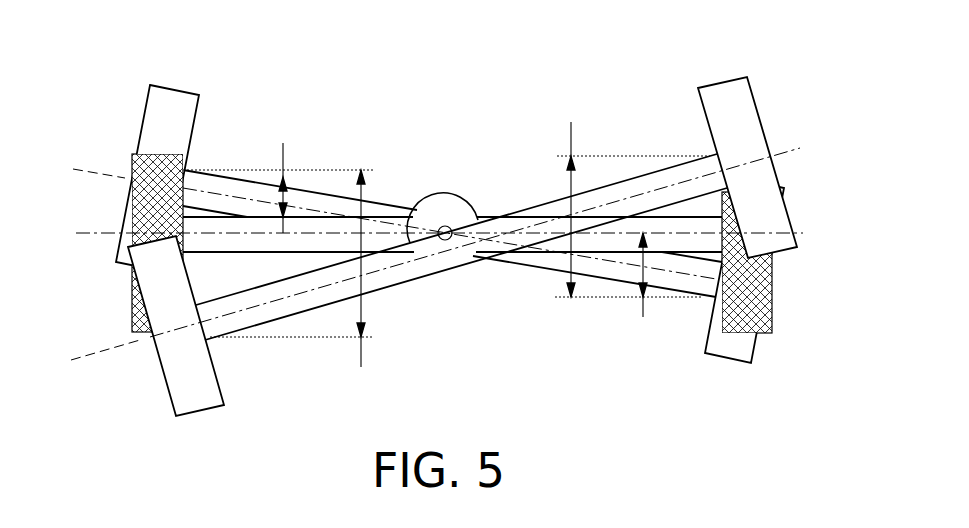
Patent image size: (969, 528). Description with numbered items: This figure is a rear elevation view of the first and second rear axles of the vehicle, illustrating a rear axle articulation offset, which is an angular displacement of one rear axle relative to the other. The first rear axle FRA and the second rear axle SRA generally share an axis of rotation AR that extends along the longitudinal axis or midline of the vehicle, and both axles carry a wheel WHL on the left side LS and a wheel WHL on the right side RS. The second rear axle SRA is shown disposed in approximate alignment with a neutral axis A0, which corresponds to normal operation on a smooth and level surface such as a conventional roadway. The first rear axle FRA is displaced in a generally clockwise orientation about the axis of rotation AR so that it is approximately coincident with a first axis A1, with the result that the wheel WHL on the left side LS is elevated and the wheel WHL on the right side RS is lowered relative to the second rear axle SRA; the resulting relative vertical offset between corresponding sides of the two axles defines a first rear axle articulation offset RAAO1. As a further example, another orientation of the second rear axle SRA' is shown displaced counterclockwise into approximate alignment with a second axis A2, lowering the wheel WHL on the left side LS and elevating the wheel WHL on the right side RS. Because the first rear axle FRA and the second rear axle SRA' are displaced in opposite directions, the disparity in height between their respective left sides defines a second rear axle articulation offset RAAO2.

The wheel WHL is at (142, 118).
The left side LS is at (206, 63).
The right side RS is at (726, 57).
The neutral axis A0 is at (88, 233).
The first axis A1 is at (88, 170).
The second axis A2 is at (97, 348).
The second rear axle SRA is at (452, 234).
The second rear axle in displaced position SRA' is at (475, 244).
The first rear axle FRA is at (387, 202).
The axis of rotation AR is at (449, 229).
The first rear axle articulation offset RAAO1 is at (643, 317).
The second rear axle articulation offset RAAO2 is at (571, 122).